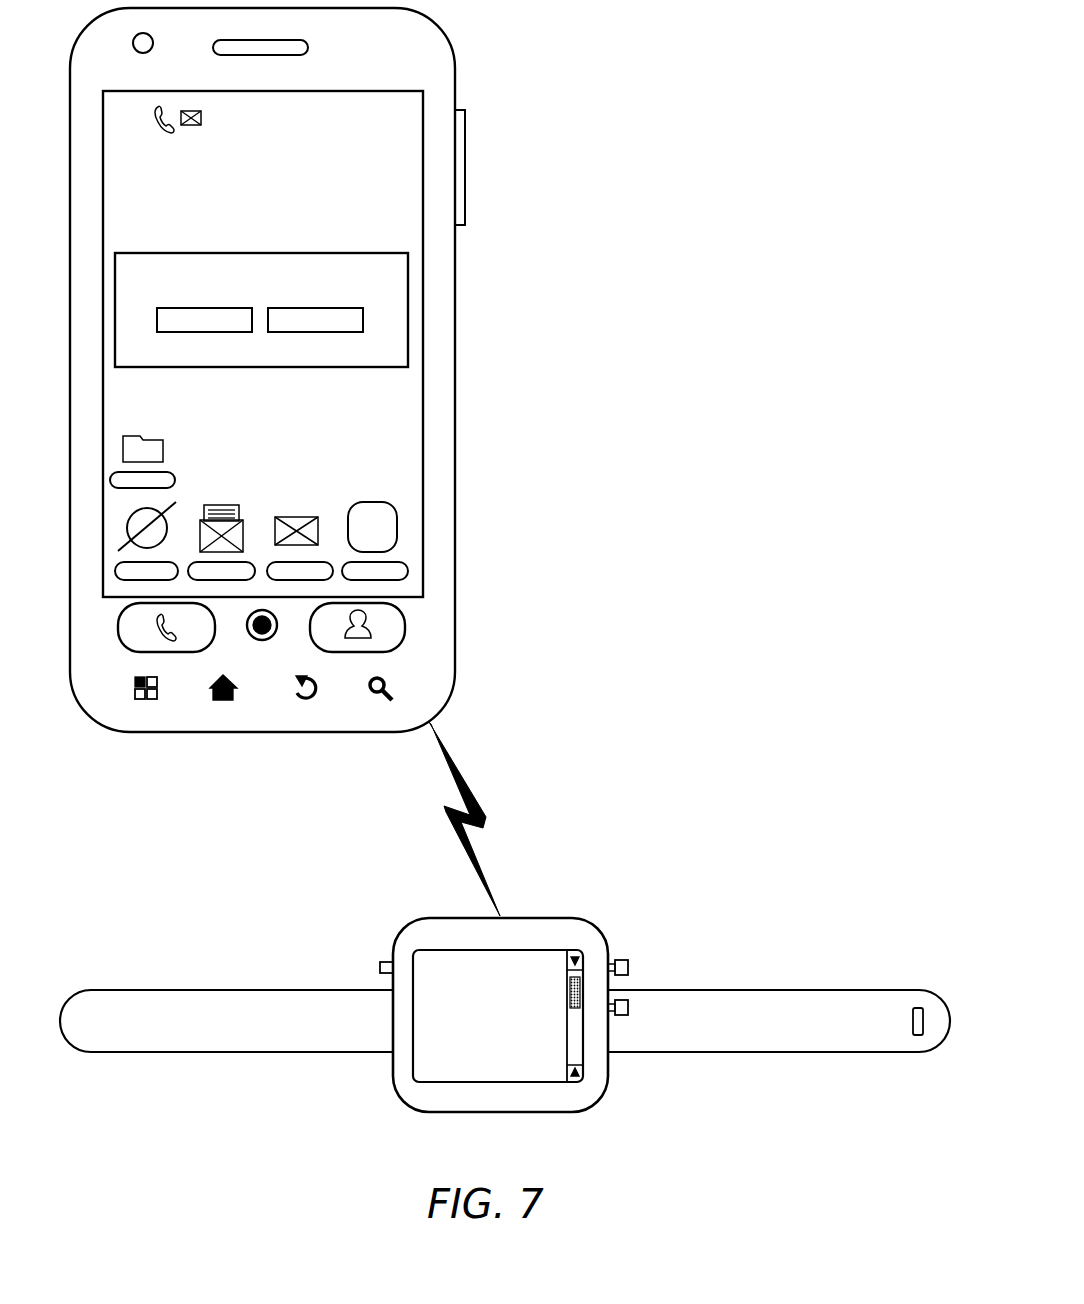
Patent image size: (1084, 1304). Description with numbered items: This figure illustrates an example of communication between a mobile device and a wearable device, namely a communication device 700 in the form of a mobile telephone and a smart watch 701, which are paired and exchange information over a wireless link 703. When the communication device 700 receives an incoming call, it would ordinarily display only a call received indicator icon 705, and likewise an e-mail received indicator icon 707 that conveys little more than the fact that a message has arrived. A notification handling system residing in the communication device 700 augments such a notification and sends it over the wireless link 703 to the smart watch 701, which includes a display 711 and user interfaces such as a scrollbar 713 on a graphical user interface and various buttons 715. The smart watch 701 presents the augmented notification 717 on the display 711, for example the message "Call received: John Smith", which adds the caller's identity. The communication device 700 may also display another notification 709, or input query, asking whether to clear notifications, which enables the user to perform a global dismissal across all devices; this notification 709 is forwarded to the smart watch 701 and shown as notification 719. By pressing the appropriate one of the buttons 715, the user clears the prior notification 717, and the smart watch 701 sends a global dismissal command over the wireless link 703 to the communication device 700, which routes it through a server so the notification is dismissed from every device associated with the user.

The communication device 700 is at (455, 62).
The smart watch 701 is at (527, 918).
The wireless link 703 is at (485, 815).
The call received indicator icon 705 is at (172, 130).
The e-mail received indicator icon 707 is at (207, 117).
The notification 709 is at (372, 367).
The display 711 is at (432, 1015).
The scrollbar 713 is at (577, 953).
The buttons 715 is at (380, 967).
The notification 717 is at (415, 958).
The notification 719 is at (553, 1070).